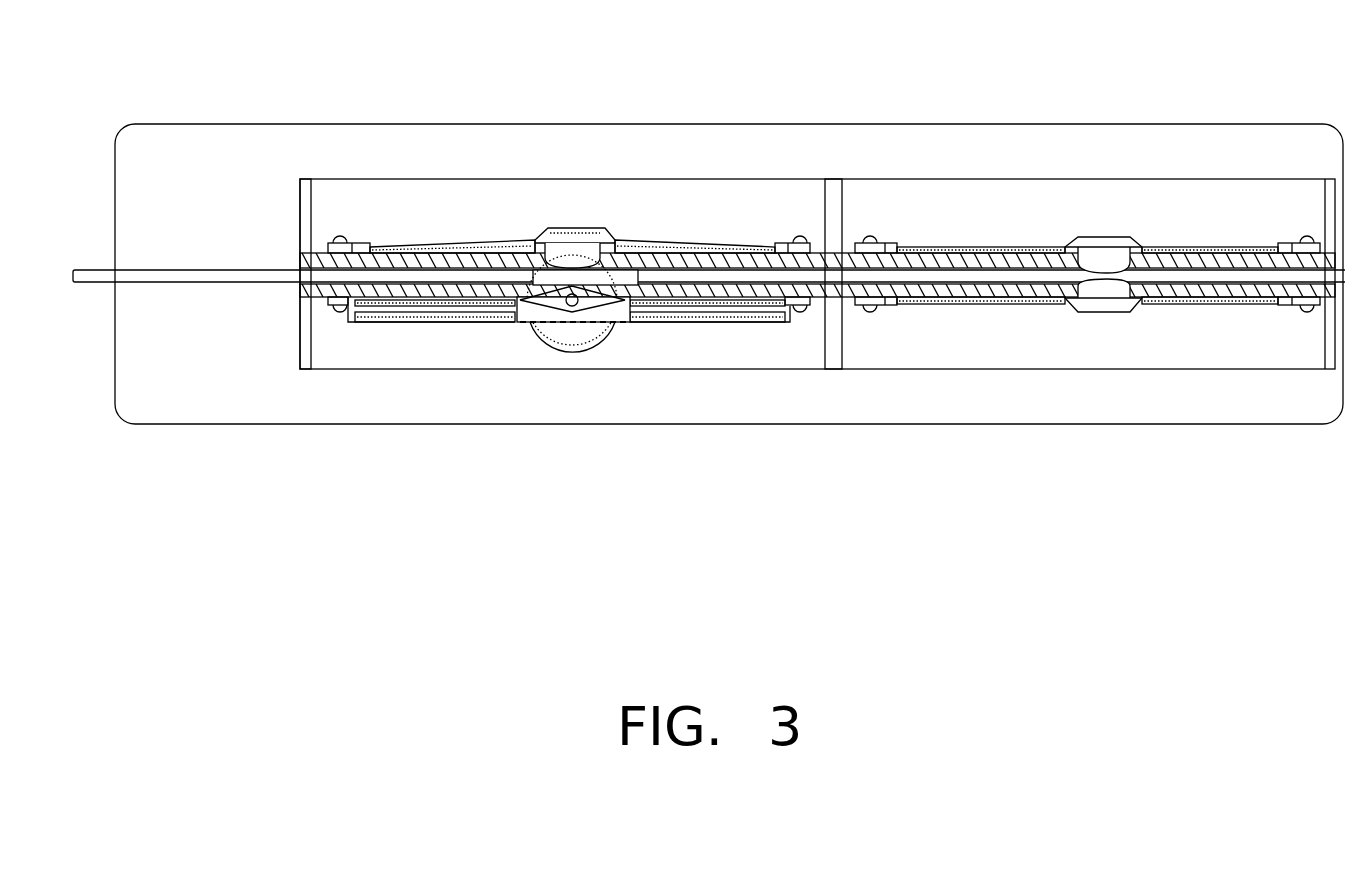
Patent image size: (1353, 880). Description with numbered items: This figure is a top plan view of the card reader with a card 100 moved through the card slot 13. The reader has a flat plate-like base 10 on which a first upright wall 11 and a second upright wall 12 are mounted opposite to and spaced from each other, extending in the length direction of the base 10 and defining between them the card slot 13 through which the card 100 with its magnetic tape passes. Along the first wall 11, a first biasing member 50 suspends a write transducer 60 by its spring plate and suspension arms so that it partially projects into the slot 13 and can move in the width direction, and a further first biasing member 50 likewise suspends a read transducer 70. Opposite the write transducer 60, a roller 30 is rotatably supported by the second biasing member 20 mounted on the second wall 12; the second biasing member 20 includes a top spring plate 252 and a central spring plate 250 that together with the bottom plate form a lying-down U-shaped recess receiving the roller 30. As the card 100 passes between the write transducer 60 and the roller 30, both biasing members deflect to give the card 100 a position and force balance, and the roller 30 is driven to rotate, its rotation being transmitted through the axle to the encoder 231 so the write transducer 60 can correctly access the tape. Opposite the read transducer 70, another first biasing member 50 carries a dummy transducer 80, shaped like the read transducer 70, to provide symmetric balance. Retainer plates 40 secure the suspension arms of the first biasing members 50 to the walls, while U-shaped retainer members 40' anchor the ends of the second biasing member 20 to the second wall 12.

The base 10 is at (228, 403).
The card 100 is at (227, 277).
The first upright wall 11 is at (300, 225).
The second upright wall 12 is at (303, 352).
The card slot 13 is at (822, 277).
The second biasing member 20 is at (745, 327).
The roller 30 is at (582, 313).
The encoder 231 is at (562, 343).
The central spring plate 250 is at (683, 322).
The top spring plate 252 is at (700, 305).
The retainer plate 40 is at (824, 372).
The retainer member 40' is at (366, 409).
The first biasing member 50 is at (693, 242).
The write transducer 60 is at (575, 258).
The read transducer 70 is at (1110, 255).
The dummy transducer 80 is at (1107, 300).